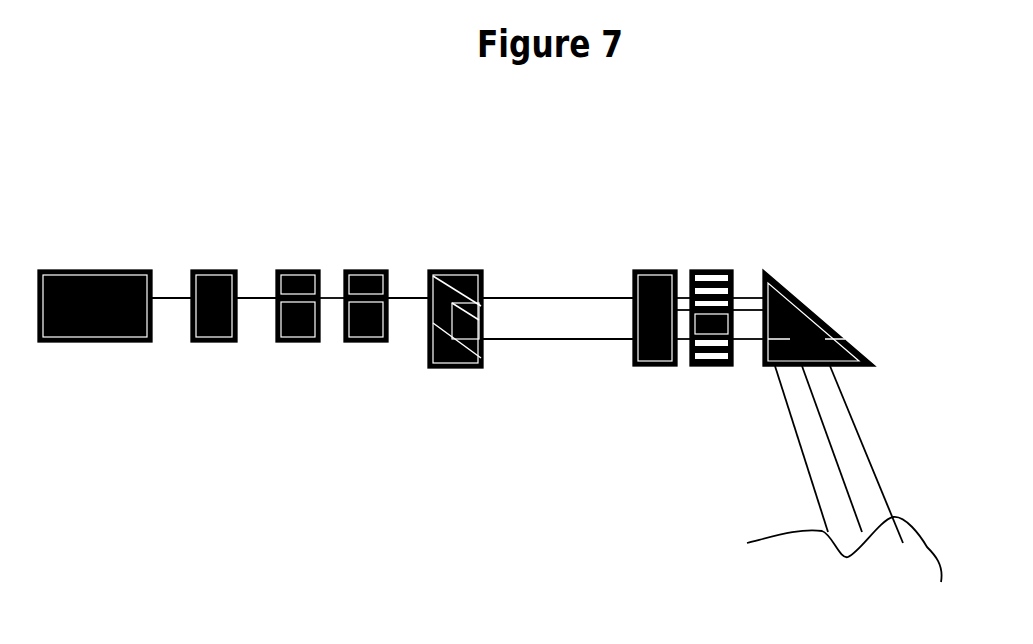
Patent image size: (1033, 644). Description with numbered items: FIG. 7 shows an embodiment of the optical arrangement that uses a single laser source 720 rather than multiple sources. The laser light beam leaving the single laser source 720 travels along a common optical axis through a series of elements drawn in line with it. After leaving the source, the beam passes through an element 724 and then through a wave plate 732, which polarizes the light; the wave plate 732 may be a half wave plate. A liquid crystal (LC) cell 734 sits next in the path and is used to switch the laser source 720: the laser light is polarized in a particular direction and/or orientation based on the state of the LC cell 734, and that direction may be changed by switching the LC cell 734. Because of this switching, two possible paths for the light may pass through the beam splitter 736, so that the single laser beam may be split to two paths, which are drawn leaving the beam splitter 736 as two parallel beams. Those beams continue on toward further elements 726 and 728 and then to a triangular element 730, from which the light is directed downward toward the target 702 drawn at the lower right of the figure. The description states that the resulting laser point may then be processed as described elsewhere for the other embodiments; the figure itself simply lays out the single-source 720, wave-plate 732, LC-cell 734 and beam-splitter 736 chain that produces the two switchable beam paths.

The finger / skin tissue 702 is at (925, 547).
The single laser source 720 is at (100, 285).
The collimating lens 724 is at (209, 340).
The detector 726 is at (655, 348).
The filter 728 is at (715, 268).
The prism 730 is at (843, 338).
The wave plate 732 is at (298, 283).
The liquid crystal (LC) cell 734 is at (360, 325).
The beam splitter 736 is at (467, 282).